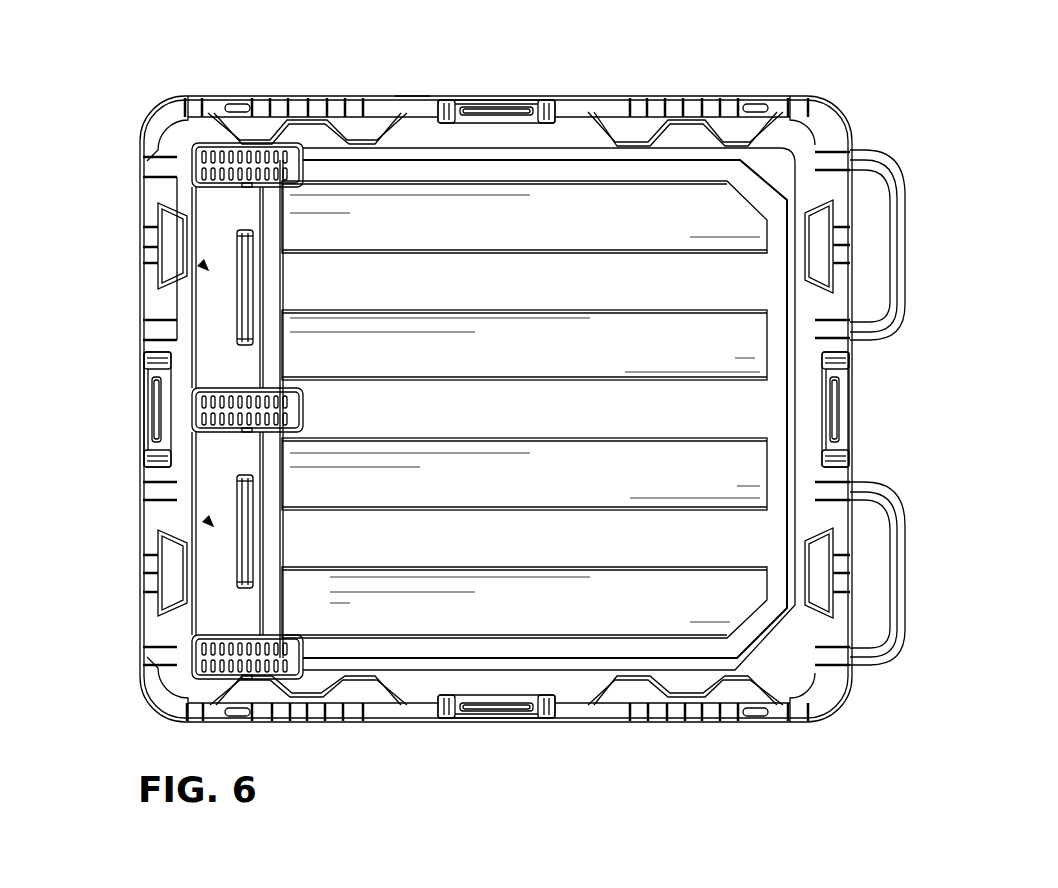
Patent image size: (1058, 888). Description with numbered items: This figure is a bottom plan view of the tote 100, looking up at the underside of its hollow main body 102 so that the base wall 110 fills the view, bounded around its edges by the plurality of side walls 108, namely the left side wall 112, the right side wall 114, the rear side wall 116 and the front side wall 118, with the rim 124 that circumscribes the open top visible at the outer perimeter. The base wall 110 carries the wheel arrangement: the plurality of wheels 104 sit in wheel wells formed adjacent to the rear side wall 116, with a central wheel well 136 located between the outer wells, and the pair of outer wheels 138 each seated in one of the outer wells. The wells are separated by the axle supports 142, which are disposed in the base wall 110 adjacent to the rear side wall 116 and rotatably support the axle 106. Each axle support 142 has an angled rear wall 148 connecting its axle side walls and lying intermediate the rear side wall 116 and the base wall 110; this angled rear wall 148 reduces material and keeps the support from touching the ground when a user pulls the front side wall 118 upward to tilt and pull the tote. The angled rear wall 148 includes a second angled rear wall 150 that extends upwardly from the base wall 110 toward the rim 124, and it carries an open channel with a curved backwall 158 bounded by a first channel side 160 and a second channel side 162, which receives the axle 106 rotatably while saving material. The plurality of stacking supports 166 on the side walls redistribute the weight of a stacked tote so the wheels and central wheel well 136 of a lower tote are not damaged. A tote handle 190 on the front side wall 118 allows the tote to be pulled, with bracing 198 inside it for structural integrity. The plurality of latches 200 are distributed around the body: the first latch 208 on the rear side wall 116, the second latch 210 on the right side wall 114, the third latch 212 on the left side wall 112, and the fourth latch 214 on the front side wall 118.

The tote 100 is at (136, 83).
The hollow main body 102 is at (729, 87).
The plurality of wheels 104 is at (234, 395).
The axle 106 is at (250, 257).
The plurality of side walls 108 is at (517, 343).
The base wall 110 is at (520, 409).
The left side wall 112 is at (594, 97).
The right side wall 114 is at (592, 725).
The rear side wall 116 is at (138, 282).
The front side wall 118 is at (853, 105).
The rim 124 is at (412, 97).
The central wheel well 136 is at (303, 407).
The pair of outer wheels 138 is at (200, 165).
The axle supports 142 is at (200, 262).
The angled rear wall 148 is at (200, 327).
The second angled rear wall 150 is at (273, 290).
The curved backwall 158 is at (200, 233).
The first channel side 160 is at (247, 347).
The second channel side 162 is at (248, 230).
The plurality of stacking supports 166 is at (134, 178).
The tote handle 190 is at (903, 215).
The bracing 198 is at (905, 635).
The plurality of latches 200 is at (504, 411).
The first latch 208 is at (146, 408).
The second latch 210 is at (483, 725).
The third latch 212 is at (494, 98).
The fourth latch 214 is at (853, 405).